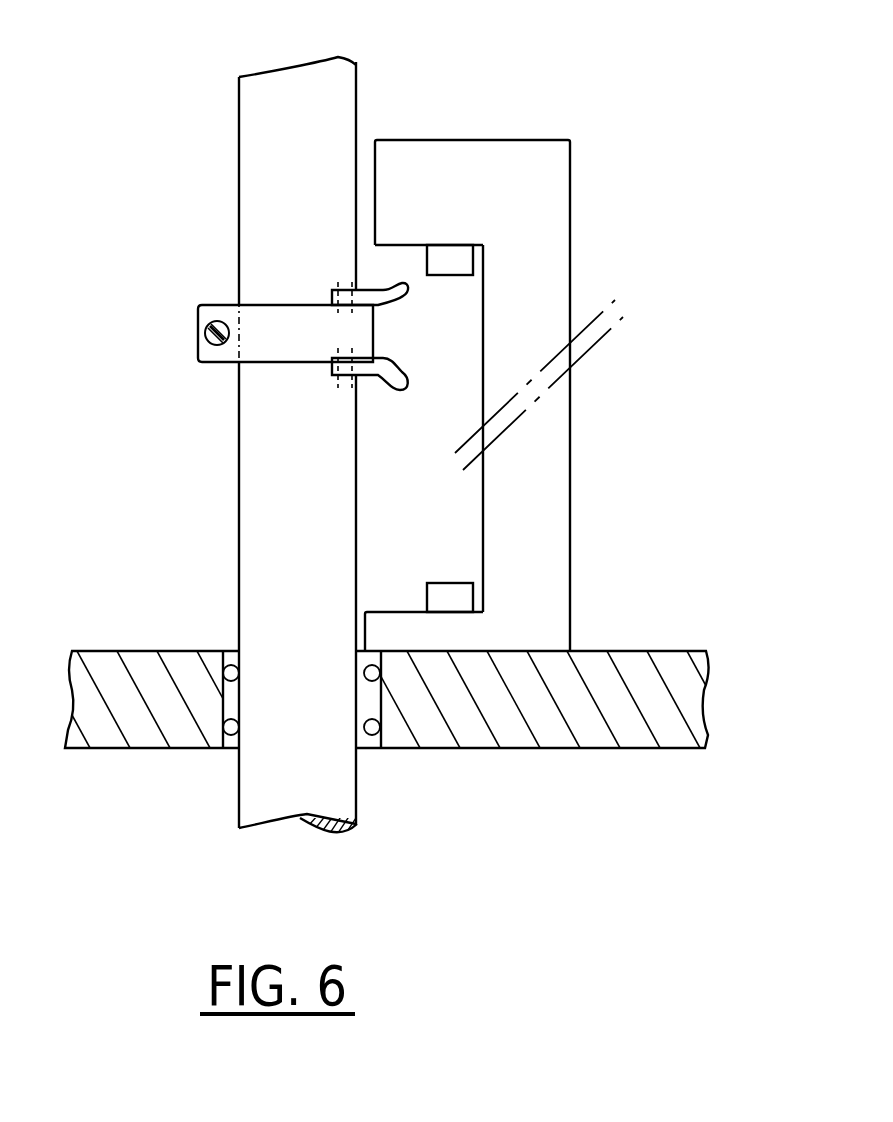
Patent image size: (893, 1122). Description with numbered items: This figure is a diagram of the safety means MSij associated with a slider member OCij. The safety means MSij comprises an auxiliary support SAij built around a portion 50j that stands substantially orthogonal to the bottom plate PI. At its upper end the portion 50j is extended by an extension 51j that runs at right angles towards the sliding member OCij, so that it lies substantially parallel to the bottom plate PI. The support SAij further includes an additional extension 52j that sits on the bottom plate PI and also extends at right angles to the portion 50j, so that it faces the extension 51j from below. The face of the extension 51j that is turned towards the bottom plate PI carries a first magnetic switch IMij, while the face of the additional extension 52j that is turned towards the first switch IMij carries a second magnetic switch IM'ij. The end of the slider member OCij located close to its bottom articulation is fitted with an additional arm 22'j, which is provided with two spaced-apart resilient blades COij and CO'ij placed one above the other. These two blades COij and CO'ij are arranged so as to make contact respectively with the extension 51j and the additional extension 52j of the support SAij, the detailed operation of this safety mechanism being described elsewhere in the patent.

The slider member OCij is at (268, 465).
The additional arm 22'j is at (262, 307).
The resilient blade COij is at (408, 291).
The resilient blade CO'ij is at (396, 398).
The safety means MSij is at (555, 366).
The extension 51j is at (437, 160).
The portion 50j is at (555, 523).
The additional extension 52j is at (422, 635).
The first magnetic switch IMij is at (453, 255).
The second magnetic switch IM'ij is at (433, 567).
The auxiliary support SAij is at (592, 281).
The bottom plate PI is at (560, 730).